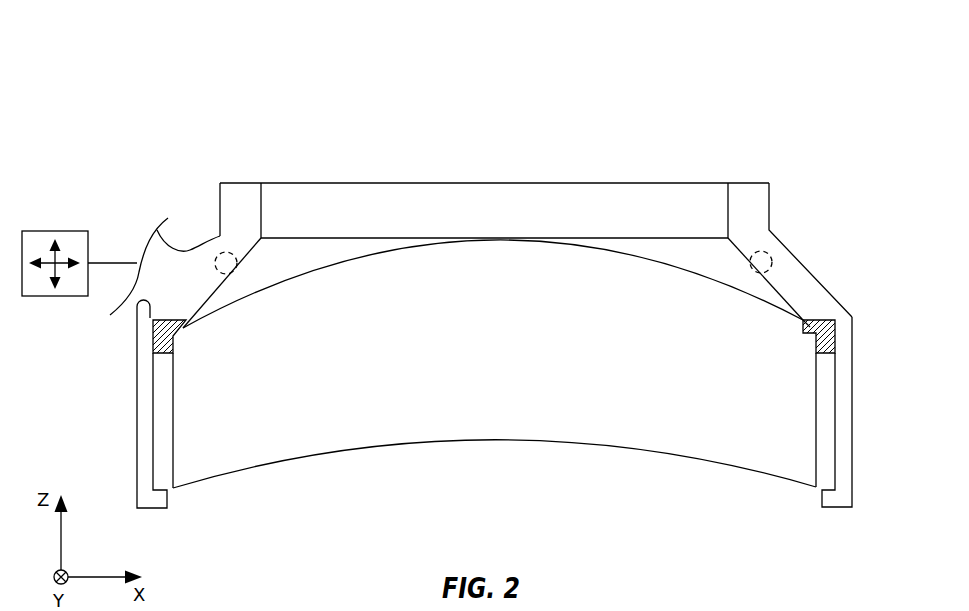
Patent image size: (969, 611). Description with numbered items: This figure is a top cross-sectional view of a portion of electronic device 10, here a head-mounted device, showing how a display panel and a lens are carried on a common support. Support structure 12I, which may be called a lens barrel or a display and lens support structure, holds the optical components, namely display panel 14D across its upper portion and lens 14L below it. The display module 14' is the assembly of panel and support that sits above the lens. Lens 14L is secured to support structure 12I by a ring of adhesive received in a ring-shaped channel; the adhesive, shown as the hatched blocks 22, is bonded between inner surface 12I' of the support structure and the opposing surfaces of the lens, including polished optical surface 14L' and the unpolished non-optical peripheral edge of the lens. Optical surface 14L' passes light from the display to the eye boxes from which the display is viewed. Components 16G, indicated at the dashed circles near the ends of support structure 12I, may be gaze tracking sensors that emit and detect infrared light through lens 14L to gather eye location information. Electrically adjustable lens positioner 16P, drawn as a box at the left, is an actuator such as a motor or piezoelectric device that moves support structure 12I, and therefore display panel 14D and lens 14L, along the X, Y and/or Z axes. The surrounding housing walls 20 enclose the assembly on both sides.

The electronic device 10 is at (880, 88).
The display module 14' is at (494, 137).
The display panel 14D is at (598, 197).
The support structure 12I is at (517, 231).
The inner surface 12I' is at (768, 335).
The components 16G is at (225, 252).
The lens positioner 16P is at (55, 231).
The housing wall 20 is at (103, 339).
The gasket / adhesive 22 is at (187, 333).
The optical surface 14L' is at (493, 288).
The lens 14L is at (494, 480).